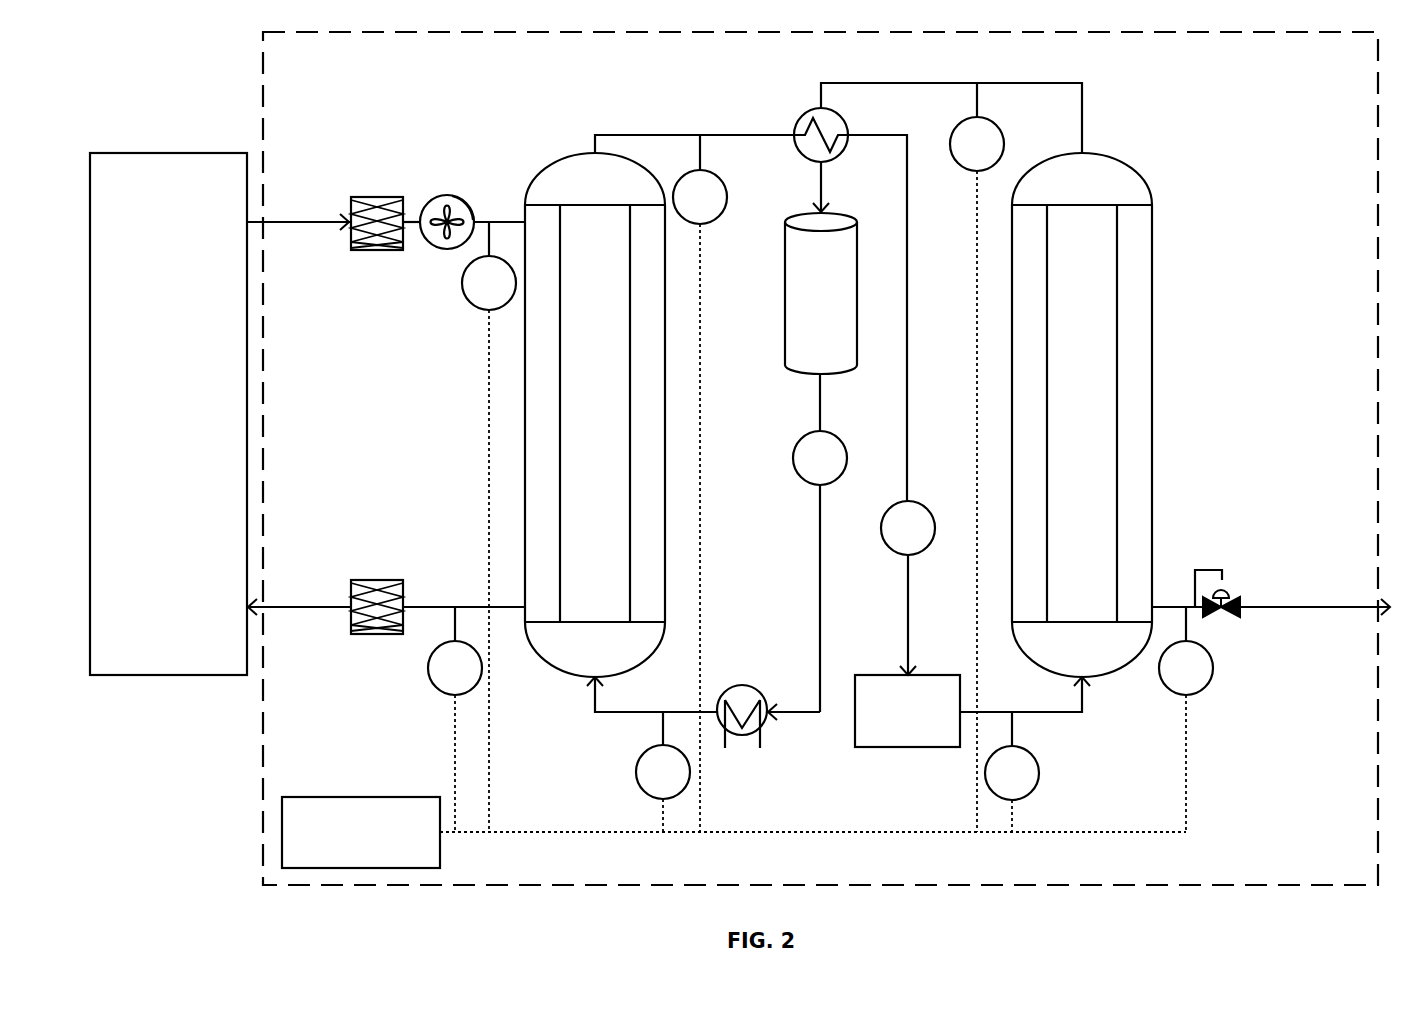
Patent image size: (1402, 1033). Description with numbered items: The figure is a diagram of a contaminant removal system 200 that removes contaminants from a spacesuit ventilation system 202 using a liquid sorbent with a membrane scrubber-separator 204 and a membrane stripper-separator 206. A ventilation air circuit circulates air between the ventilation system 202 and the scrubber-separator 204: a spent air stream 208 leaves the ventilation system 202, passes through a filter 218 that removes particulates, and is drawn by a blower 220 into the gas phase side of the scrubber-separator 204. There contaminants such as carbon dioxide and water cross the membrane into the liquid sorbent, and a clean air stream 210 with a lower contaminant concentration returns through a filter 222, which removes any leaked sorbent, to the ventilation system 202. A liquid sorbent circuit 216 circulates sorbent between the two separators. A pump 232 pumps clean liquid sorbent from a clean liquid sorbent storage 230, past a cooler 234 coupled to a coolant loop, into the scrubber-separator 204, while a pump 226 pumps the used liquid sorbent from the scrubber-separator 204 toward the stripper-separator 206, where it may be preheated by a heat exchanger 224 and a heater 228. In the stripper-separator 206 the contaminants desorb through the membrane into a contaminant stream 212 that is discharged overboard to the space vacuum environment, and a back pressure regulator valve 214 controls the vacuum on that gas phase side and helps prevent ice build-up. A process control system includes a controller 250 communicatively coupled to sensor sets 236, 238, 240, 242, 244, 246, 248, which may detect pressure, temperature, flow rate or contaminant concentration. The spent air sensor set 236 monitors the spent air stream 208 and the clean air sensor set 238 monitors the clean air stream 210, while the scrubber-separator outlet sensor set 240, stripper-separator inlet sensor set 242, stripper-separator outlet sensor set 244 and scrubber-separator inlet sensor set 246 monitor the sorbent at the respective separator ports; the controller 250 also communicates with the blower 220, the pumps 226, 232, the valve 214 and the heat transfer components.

The contaminant removal system 200 is at (302, 91).
The ventilation system 202 is at (155, 450).
The membrane scrubber-separator 204 is at (580, 422).
The membrane stripper-separator 206 is at (1067, 422).
The spent air stream 208 is at (266, 222).
The clean air stream 210 is at (266, 607).
The contaminant stream 212 is at (1287, 607).
The back pressure regulator valve 214 is at (1228, 587).
The liquid sorbent circuit 216 is at (1125, 79).
The filter 218 is at (362, 197).
The blower 220 is at (460, 203).
The filter 222 is at (362, 580).
The heat exchanger 224 is at (838, 125).
The pump 226 is at (893, 537).
The heater 228 is at (894, 735).
The clean liquid sorbent storage 230 is at (806, 301).
The pump 232 is at (805, 467).
The cooler 234 is at (752, 688).
The spent air sensor set 236 is at (474, 292).
The clean air sensor set 238 is at (440, 677).
The scrubber-separator outlet sensor set 240 is at (685, 206).
The stripper-separator inlet sensor set 242 is at (997, 782).
The stripper-separator outlet sensor set 244 is at (962, 153).
The scrubber-separator inlet sensor set 246 is at (648, 781).
The sensor set 248 is at (1171, 677).
The controller 250 is at (347, 855).